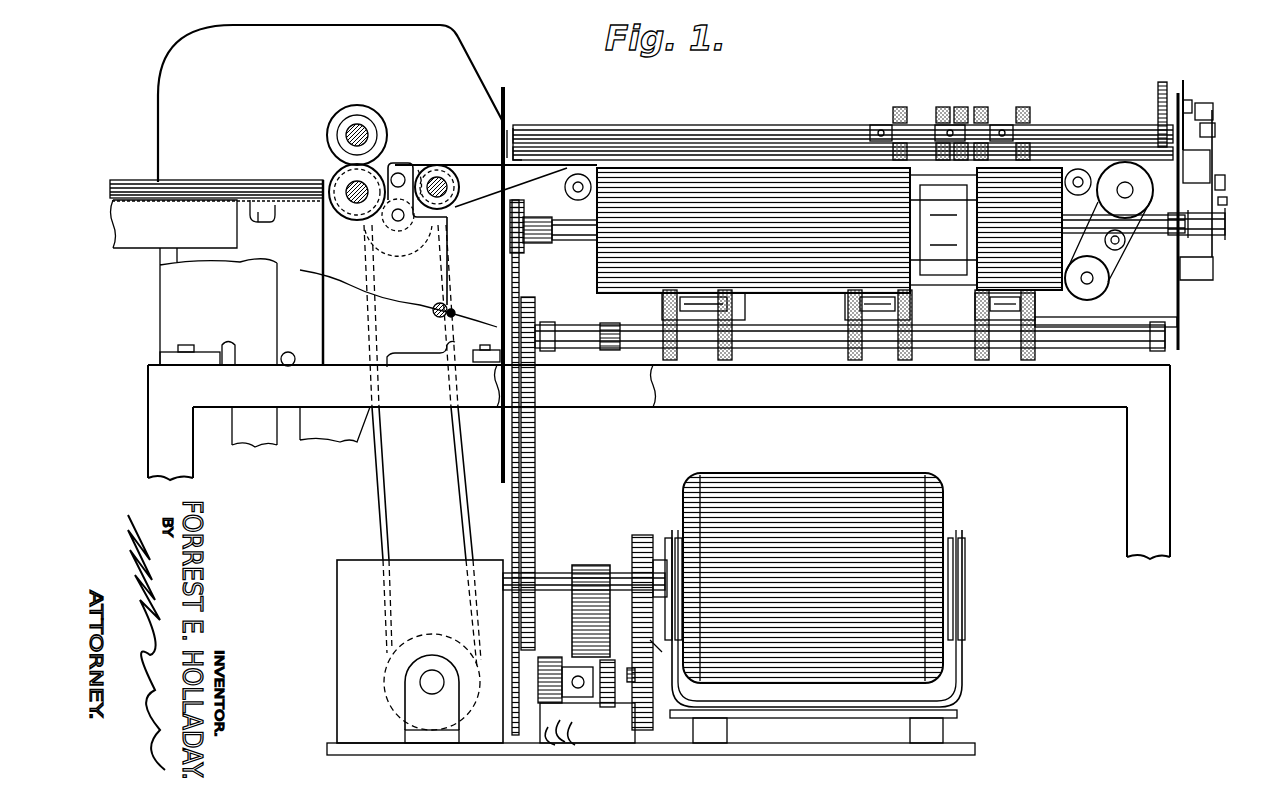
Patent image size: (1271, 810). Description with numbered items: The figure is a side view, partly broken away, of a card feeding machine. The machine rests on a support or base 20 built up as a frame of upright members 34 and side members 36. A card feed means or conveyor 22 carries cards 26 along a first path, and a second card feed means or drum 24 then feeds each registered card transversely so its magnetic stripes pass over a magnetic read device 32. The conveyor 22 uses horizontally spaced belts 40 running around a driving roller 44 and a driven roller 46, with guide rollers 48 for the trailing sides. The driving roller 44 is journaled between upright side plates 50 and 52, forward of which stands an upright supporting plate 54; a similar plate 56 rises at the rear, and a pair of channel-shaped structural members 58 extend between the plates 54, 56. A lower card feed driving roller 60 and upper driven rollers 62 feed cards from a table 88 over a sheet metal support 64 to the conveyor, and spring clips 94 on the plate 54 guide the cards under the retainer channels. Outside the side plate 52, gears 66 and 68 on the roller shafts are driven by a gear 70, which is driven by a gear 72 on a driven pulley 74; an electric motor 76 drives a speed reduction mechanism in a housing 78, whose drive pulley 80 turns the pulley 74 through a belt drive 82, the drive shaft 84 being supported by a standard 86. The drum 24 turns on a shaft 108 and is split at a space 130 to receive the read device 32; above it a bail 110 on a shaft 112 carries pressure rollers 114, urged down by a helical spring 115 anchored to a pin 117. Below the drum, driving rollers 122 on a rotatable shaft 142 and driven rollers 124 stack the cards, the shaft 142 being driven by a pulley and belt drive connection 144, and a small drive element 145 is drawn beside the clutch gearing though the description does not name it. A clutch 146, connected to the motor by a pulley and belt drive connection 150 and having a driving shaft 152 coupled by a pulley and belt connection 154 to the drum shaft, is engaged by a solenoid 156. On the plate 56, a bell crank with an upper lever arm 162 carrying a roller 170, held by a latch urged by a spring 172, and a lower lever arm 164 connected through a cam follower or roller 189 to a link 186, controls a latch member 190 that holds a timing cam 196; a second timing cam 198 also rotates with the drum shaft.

The support or base 20 is at (146, 372).
The card feed means or conveyor 22 is at (471, 160).
The second card feed means or drum 24 is at (594, 283).
The cards 26 is at (214, 180).
The magnetic read device 32 is at (905, 202).
The upright members 34 is at (1193, 473).
The side members 36 is at (744, 408).
The belts 40 is at (571, 191).
The driving roller 44 is at (466, 210).
The driven roller 46 is at (1120, 163).
The guide rollers 48 is at (1110, 283).
The side plate 50 is at (160, 310).
The side plate 52 is at (158, 129).
The upright supporting plate 54 is at (507, 104).
The plate 56 is at (1182, 318).
The structural members 58 is at (573, 350).
The lower card feed driving roller 60 is at (388, 170).
The upper driven rollers 62 is at (357, 105).
The sheet metal support 64 is at (410, 165).
The gear 66 is at (334, 176).
The gear 68 is at (462, 186).
The gear 70 is at (426, 170).
The gear 72 is at (397, 232).
The driven pulley 74 is at (435, 300).
The electric motor 76 is at (918, 475).
The housing 78 is at (337, 603).
The drive pulley 80 is at (385, 690).
The belt drive 82 is at (386, 510).
The drive shaft 84 is at (638, 535).
The standard 86 is at (585, 565).
The table 88 is at (134, 250).
The spring clips 94 is at (525, 152).
The shaft 108 is at (1165, 236).
The bail 110 is at (948, 107).
The shaft 112 is at (1127, 125).
The pressure rollers 114 is at (1022, 107).
The helical spring 115 is at (1160, 82).
The pin 117 is at (1192, 100).
The driving rollers 122 is at (1028, 364).
The driven rollers 124 is at (1038, 297).
The space between drum sections 130 is at (958, 287).
The rotatable shaft 142 is at (614, 352).
The pulley and belt drive connection 144 is at (524, 490).
The pinion 145 is at (635, 680).
The clutch 146 is at (605, 660).
The pulley and belt drive connection 150 is at (652, 640).
The driving shaft 152 is at (540, 727).
The pulley and belt connection 154 is at (518, 488).
The solenoid 156 is at (570, 667).
The upper lever arm 162 is at (1215, 120).
The lower lever arm 164 is at (1214, 152).
The roller 170 is at (1213, 103).
The spring 172 is at (1185, 80).
The link 186 is at (1212, 172).
The cam follower or roller 189 is at (1226, 184).
The latch member 190 is at (1205, 272).
The timing cam 196 is at (1228, 203).
The second timing cam 198 is at (1227, 223).